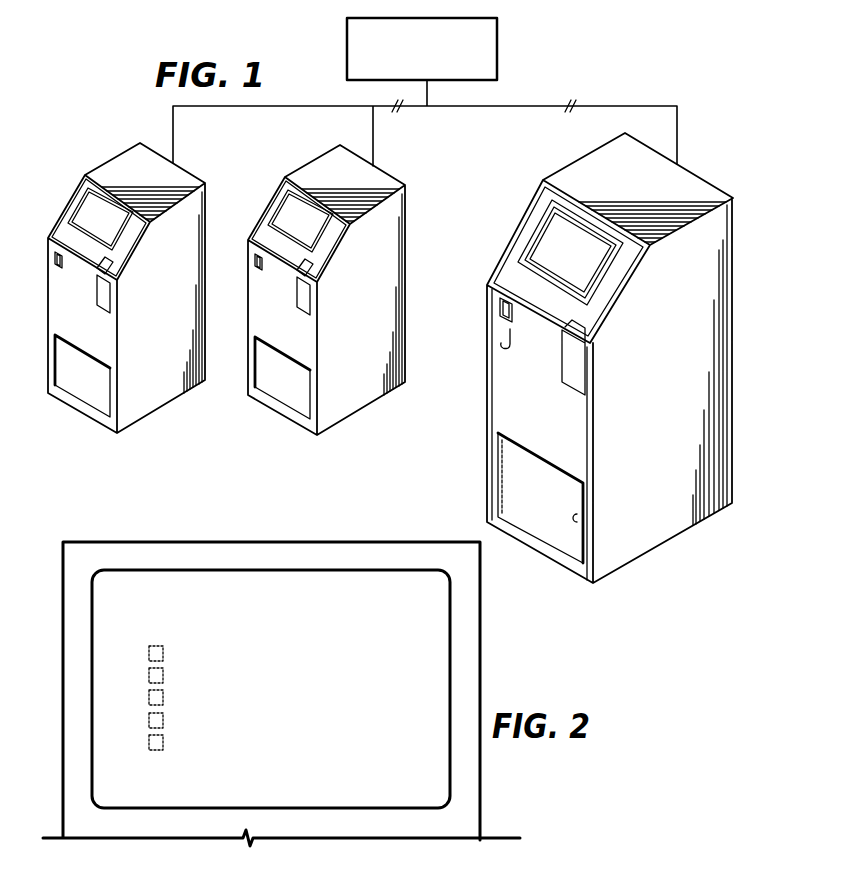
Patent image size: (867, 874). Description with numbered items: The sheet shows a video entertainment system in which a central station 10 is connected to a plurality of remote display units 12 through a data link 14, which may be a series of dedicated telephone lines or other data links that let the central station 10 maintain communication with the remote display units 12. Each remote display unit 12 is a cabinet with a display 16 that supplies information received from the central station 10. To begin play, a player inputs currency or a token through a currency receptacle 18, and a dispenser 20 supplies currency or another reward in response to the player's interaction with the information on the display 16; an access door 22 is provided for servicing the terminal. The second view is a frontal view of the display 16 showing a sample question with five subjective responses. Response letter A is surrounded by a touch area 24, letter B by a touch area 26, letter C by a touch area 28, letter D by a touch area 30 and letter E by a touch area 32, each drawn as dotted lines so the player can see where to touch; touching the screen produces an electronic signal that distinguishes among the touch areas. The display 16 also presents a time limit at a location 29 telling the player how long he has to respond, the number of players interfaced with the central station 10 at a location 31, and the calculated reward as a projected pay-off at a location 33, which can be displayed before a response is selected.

In FIG. 1, the central station 10 is at (498, 50).
In FIG. 1, the remote display unit 12 is at (203, 177).
In FIG. 2, the remote display unit 12 is at (188, 541).
In FIG. 1, the data link 14 is at (590, 107).
In FIG. 1, the display 16 is at (548, 247).
In FIG. 2, the display 16 is at (247, 583).
In FIG. 1, the currency receptacle 18 is at (478, 307).
In FIG. 1, the dispenser 20 is at (575, 343).
In FIG. 1, the access door 22 is at (476, 490).
In FIG. 2, the touch area 24 is at (149, 653).
In FIG. 2, the touch area 26 is at (149, 676).
In FIG. 2, the touch area 28 is at (149, 698).
In FIG. 2, the touch area 30 is at (149, 721).
In FIG. 2, the touch area 32 is at (149, 743).
In FIG. 2, the time limit location 29 is at (405, 748).
In FIG. 2, the player number location 31 is at (440, 780).
In FIG. 2, the pay-off location 33 is at (438, 800).